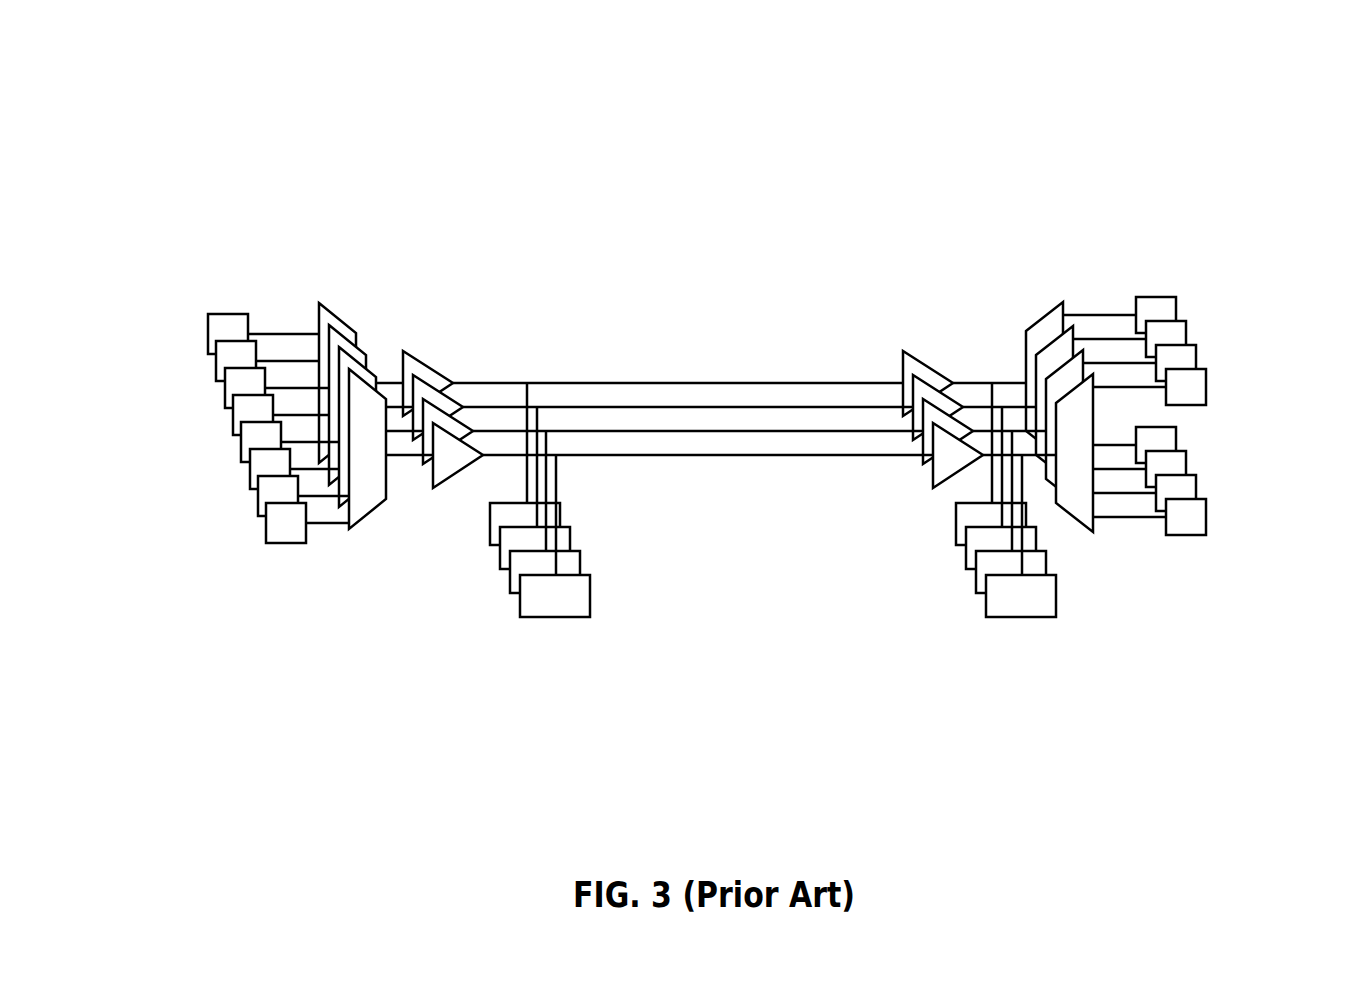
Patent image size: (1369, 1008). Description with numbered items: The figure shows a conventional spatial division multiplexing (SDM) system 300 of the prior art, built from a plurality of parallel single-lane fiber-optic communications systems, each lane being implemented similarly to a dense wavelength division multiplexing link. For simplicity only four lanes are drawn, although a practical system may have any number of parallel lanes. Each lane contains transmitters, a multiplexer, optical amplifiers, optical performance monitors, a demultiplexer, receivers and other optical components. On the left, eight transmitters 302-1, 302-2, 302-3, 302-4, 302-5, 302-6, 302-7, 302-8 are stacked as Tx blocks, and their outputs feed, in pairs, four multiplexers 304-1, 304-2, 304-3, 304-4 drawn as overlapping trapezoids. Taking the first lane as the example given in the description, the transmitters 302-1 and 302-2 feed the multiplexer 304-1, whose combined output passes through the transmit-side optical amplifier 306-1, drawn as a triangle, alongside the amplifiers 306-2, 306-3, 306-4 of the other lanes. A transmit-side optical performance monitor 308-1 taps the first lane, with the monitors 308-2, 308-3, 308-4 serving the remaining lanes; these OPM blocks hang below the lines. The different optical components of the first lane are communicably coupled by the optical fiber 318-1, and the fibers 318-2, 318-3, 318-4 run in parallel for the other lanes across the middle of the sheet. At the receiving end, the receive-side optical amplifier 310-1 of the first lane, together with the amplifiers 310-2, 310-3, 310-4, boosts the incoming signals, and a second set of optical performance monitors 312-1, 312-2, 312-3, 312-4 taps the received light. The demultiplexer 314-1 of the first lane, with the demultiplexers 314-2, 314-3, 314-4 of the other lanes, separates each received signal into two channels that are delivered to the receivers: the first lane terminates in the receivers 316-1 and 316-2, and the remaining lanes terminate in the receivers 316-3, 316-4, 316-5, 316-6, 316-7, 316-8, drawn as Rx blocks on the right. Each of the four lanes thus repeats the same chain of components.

The SDM system 300 is at (157, 33).
The transmitter 302-1 is at (264, 523).
The transmitter 302-2 is at (231, 415).
The transmitter 302-3 is at (256, 496).
The transmitter 302-4 is at (223, 388).
The transmitter 302-5 is at (248, 469).
The transmitter 302-6 is at (215, 361).
The transmitter 302-7 is at (240, 442).
The transmitter 302-8 is at (206, 334).
The multiplexer 304-1 is at (362, 520).
The multiplexer 304-2 is at (372, 374).
The multiplexer 304-3 is at (360, 350).
The multiplexer 304-4 is at (336, 316).
The optical amplifier 306-1 is at (483, 447).
The optical amplifier 306-2 is at (470, 422).
The optical amplifier 306-3 is at (457, 402).
The optical amplifier 306-4 is at (433, 367).
The optical performance monitor 308-1 is at (591, 596).
The optical performance monitor 308-2 is at (581, 563).
The optical performance monitor 308-3 is at (571, 539).
The optical performance monitor 308-4 is at (561, 515).
The optical amplifier 310-1 is at (975, 447).
The optical amplifier 310-2 is at (953, 416).
The optical amplifier 310-3 is at (935, 388).
The optical amplifier 310-4 is at (915, 359).
The optical performance monitor 312-1 is at (985, 596).
The optical performance monitor 312-2 is at (975, 563).
The optical performance monitor 312-3 is at (965, 539).
The optical performance monitor 312-4 is at (955, 515).
The demultiplexer 314-1 is at (1082, 524).
The demultiplexer 314-2 is at (1078, 349).
The demultiplexer 314-3 is at (1066, 329).
The demultiplexer 314-4 is at (1048, 314).
The receiver 316-1 is at (1207, 517).
The receiver 316-2 is at (1207, 387).
The receiver 316-3 is at (1197, 489).
The receiver 316-4 is at (1197, 359).
The receiver 316-5 is at (1187, 465).
The receiver 316-6 is at (1187, 335).
The receiver 316-7 is at (1177, 441).
The receiver 316-8 is at (1177, 311).
The optical fiber 318-1 is at (798, 455).
The optical fiber 318-2 is at (758, 431).
The optical fiber 318-3 is at (717, 407).
The optical fiber 318-4 is at (677, 383).